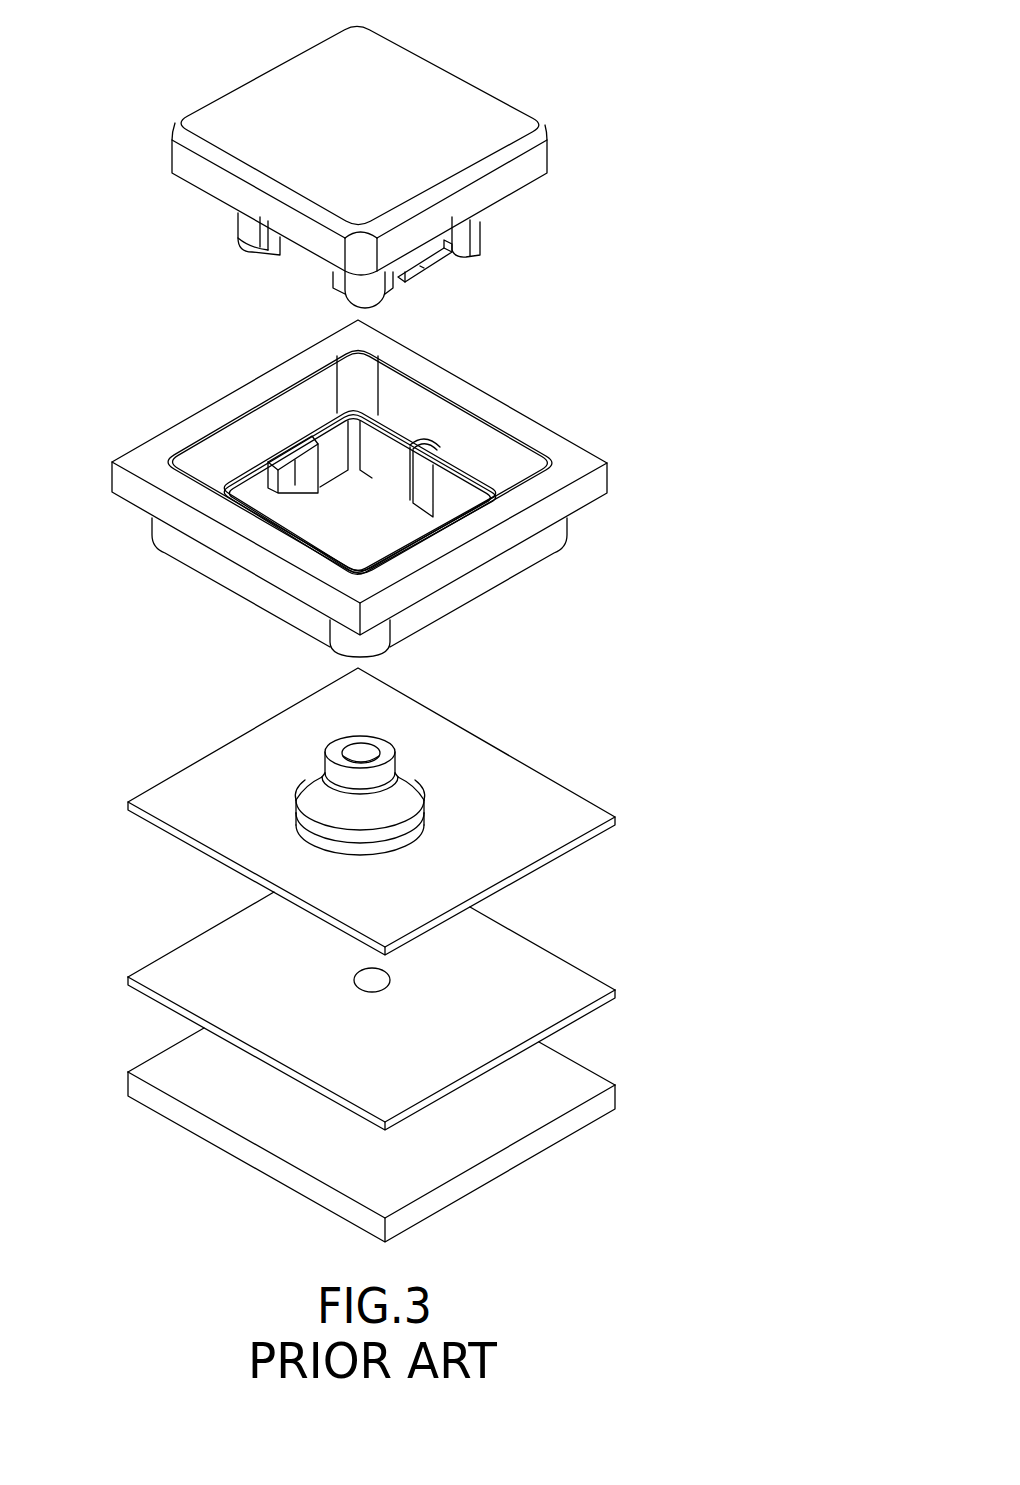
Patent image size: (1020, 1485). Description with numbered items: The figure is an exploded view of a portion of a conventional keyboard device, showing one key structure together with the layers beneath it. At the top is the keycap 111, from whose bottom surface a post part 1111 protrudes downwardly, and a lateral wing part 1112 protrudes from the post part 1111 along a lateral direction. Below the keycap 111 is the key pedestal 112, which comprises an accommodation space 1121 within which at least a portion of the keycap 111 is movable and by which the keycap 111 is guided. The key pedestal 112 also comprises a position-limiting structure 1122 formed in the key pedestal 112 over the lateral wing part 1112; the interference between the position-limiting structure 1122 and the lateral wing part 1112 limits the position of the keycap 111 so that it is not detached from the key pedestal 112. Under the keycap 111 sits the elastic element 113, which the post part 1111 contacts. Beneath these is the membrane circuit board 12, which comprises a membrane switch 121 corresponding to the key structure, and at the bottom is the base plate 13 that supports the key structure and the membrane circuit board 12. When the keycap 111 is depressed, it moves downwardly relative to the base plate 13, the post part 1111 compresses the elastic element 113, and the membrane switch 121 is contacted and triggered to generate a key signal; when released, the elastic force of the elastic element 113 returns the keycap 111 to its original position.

The keycap 111 is at (361, 175).
The post part 1111 is at (248, 228).
The lateral wing part 1112 is at (430, 253).
The key pedestal 112 is at (371, 488).
The accommodation space 1121 is at (372, 512).
The position-limiting structure 1122 is at (292, 457).
The elastic element 113 is at (400, 800).
The membrane circuit board 12 is at (371, 1011).
The membrane switch 121 is at (378, 982).
The base plate 13 is at (565, 1077).